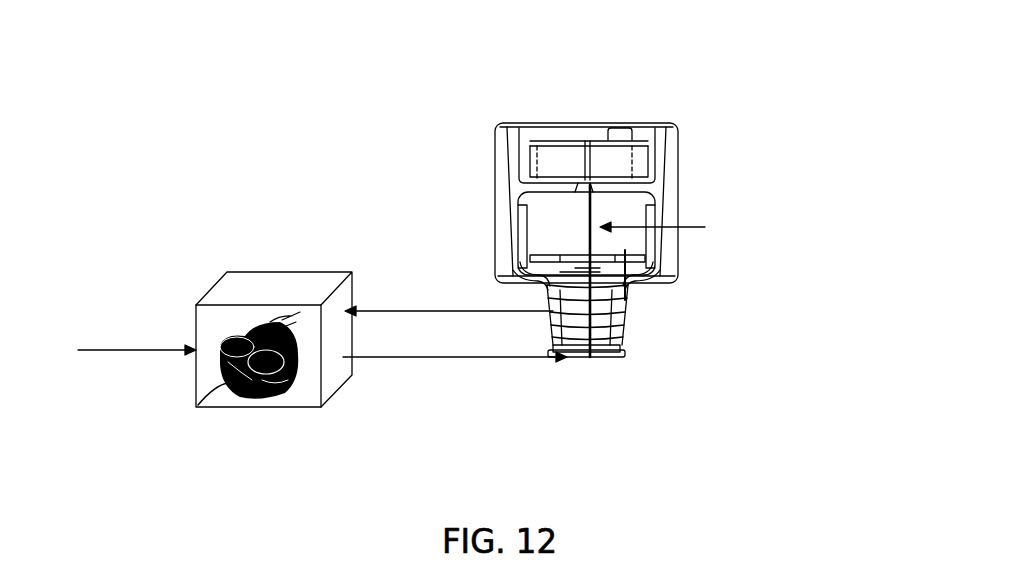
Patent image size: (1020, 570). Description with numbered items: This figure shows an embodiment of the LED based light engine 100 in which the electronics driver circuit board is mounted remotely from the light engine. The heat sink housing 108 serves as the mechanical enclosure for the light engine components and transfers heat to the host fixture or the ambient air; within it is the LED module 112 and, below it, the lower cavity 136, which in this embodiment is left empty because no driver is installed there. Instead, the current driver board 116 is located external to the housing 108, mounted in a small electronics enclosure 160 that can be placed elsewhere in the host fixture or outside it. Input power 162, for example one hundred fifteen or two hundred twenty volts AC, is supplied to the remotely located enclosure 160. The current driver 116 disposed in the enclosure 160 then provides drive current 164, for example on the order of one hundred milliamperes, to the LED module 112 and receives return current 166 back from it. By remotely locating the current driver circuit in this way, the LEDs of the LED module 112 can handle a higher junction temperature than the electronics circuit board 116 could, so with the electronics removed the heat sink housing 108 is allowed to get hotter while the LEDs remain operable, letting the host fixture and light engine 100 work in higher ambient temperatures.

The LED based light engine 100 is at (660, 108).
The heat sink housing 108 is at (500, 178).
The LED module 112 is at (625, 178).
The lower cavity 136 is at (568, 235).
The electronics enclosure 160 is at (218, 295).
The current driver board 116 is at (190, 406).
The input power 162 is at (98, 353).
The drive current 164 is at (545, 358).
The return current 166 is at (368, 311).